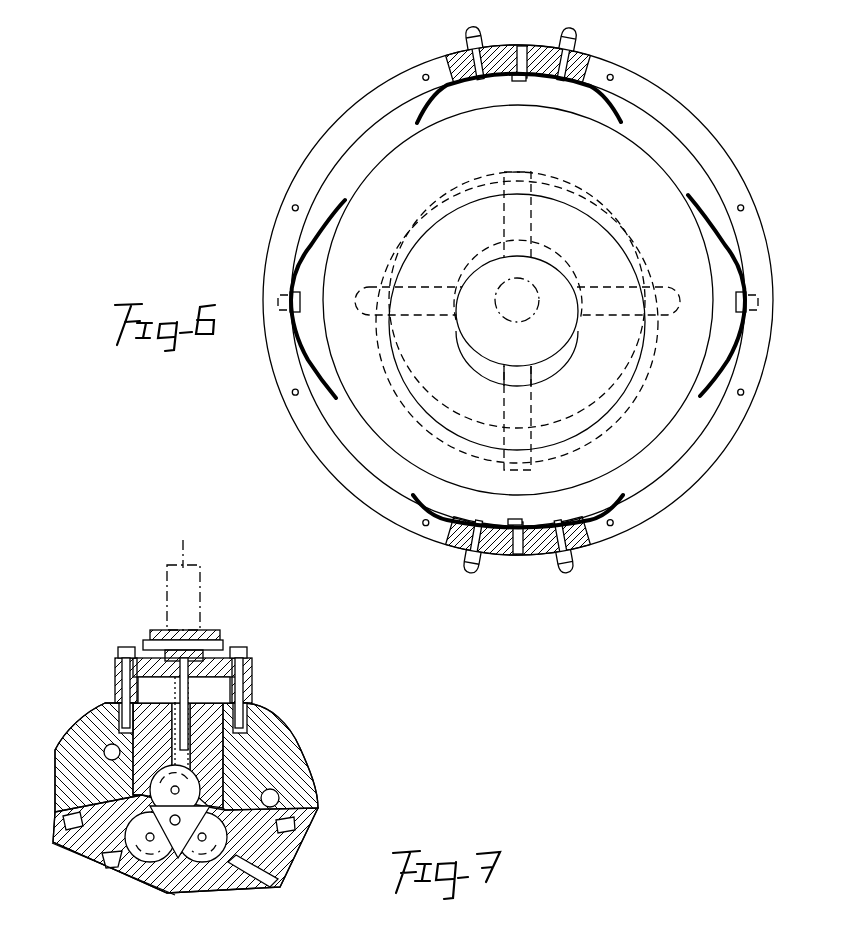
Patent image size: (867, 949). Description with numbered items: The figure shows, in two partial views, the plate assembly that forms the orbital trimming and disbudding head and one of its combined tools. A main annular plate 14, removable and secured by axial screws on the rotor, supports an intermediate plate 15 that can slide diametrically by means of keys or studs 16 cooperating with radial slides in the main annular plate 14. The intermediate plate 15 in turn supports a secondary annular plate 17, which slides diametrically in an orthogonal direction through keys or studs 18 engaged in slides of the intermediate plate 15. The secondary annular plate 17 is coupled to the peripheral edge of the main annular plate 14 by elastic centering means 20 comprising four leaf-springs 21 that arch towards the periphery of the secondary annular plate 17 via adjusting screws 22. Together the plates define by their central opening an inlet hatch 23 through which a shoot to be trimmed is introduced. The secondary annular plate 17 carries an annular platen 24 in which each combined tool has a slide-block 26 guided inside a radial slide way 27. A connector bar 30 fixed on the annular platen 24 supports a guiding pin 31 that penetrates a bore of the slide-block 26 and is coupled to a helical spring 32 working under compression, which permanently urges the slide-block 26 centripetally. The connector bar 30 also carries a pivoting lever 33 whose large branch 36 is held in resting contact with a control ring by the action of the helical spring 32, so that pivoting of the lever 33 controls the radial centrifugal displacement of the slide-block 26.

In FIG. 6, the main annular plate 14 is at (390, 92).
In FIG. 6, the intermediate plate 15 is at (478, 367).
In FIG. 6, the keys or studs 16 is at (517, 322).
In FIG. 6, the secondary annular plate 17 is at (628, 461).
In FIG. 6, the keys or studs 18 is at (517, 321).
In FIG. 6, the elastic centering means 20 is at (612, 108).
In FIG. 6, the leaf-springs 21 is at (698, 203).
In FIG. 6, the adjusting screws 22 is at (481, 568).
In FIG. 6, the inlet hatch 23 is at (540, 296).
In FIG. 7, the annular platen 24 is at (273, 732).
In FIG. 7, the slide-block 26 is at (210, 752).
In FIG. 7, the radial slide way 27 is at (227, 768).
In FIG. 7, the connector bar 30 is at (248, 668).
In FIG. 7, the guiding pin 31 is at (207, 650).
In FIG. 7, the helical spring 32 is at (232, 688).
In FIG. 7, the pivoting lever 33 is at (203, 586).
In FIG. 7, the large branch 36 is at (182, 538).